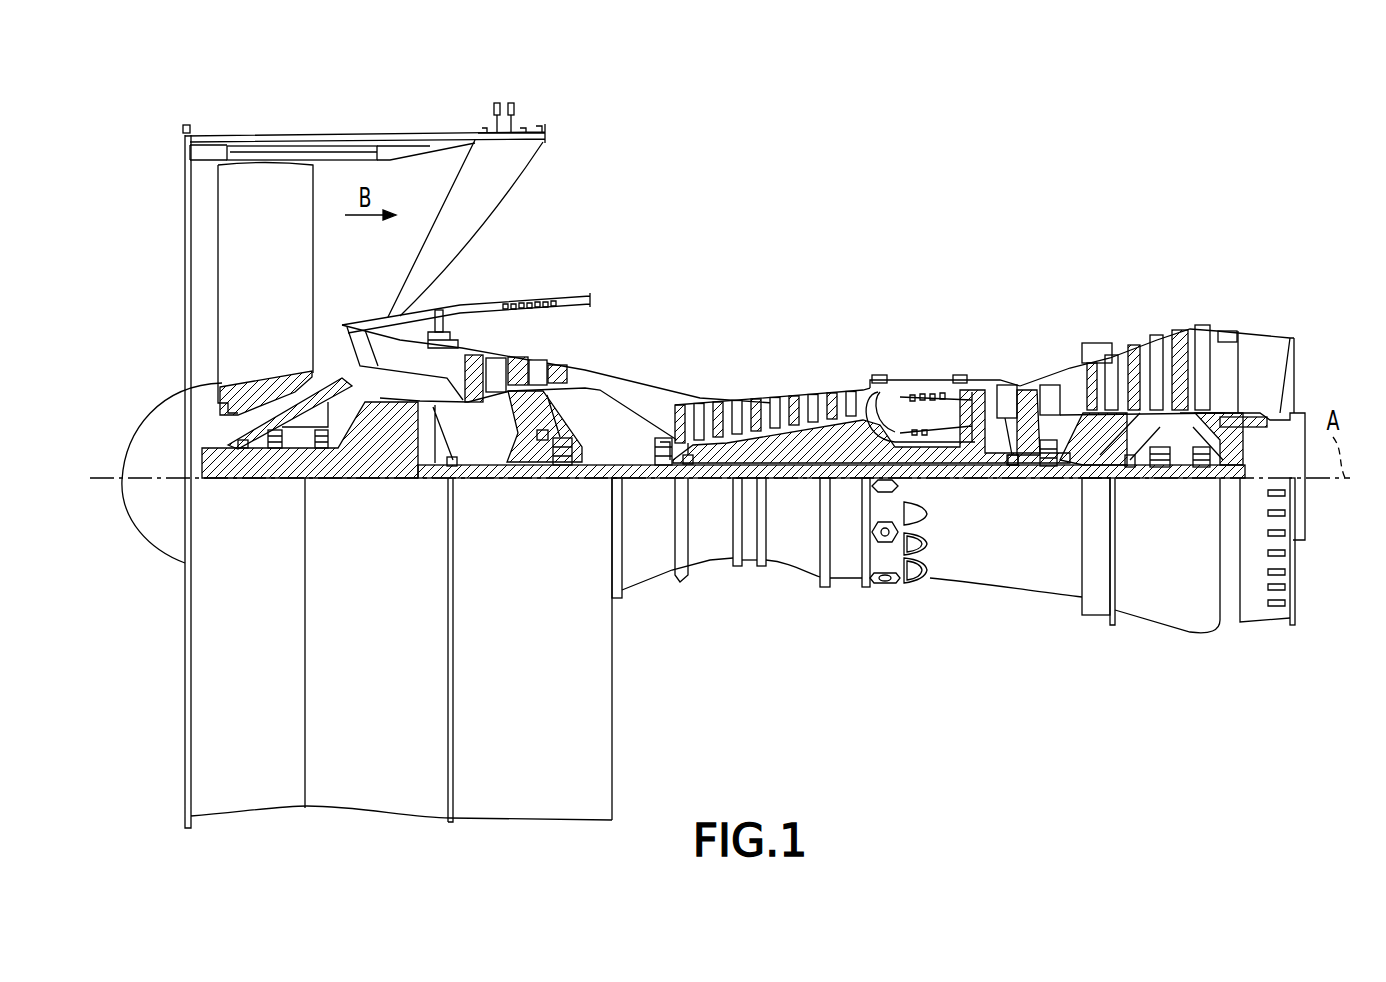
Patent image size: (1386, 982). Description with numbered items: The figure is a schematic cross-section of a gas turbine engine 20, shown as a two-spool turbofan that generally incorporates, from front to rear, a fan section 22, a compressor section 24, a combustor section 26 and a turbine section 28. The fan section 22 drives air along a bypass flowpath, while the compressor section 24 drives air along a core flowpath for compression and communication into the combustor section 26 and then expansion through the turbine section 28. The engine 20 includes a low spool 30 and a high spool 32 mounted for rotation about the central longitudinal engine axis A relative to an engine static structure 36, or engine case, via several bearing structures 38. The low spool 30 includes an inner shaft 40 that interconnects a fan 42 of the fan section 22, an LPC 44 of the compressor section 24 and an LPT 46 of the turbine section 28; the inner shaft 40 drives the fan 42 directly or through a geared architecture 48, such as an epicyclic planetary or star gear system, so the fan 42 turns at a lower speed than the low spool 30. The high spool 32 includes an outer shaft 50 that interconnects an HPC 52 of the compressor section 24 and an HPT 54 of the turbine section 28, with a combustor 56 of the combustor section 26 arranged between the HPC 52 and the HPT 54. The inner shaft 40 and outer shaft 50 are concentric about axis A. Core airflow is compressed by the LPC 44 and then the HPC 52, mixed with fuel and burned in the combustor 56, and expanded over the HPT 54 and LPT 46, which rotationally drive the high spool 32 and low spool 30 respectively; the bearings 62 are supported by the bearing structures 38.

The gas turbine engine 20 is at (986, 165).
The fan section 22 is at (447, 98).
The compressor section 24 is at (455, 246).
The combustor section 26 is at (870, 246).
The turbine section 28 is at (1228, 246).
The low spool 30 is at (800, 505).
The high spool 32 is at (842, 445).
The engine static structure 36 is at (843, 597).
The bearing structures 38 is at (1082, 325).
The inner shaft 40 is at (636, 482).
The fan 42 is at (250, 276).
The LPC 44 is at (540, 362).
The LPT 46 is at (1155, 355).
The geared architecture 48 is at (405, 450).
The outer shaft 50 is at (928, 468).
The HPC 52 is at (776, 447).
The HPT 54 is at (1005, 385).
The combustor 56 is at (938, 408).
The bearing 62 is at (692, 472).